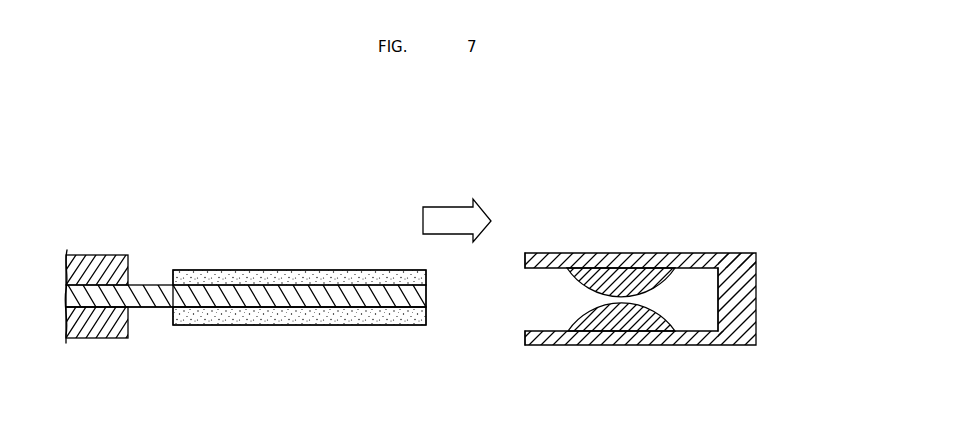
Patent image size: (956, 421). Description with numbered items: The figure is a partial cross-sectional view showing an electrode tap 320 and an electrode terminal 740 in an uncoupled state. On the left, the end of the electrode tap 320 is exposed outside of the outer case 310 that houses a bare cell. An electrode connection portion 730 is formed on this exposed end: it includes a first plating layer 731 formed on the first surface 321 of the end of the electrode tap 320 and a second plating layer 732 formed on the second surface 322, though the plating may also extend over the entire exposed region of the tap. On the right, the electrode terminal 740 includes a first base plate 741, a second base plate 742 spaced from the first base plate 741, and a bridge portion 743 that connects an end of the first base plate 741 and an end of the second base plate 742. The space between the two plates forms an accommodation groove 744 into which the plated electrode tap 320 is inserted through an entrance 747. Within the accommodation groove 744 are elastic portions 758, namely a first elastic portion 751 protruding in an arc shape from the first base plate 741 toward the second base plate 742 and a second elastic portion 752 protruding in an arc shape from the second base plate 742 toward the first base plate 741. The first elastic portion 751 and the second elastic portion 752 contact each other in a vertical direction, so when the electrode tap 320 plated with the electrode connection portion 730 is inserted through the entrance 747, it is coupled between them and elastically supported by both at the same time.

The outer case 310 is at (97, 257).
The electrode tap 320 is at (96, 310).
The first surface 321 is at (153, 286).
The second surface 322 is at (153, 307).
The electrode connection portion 730 is at (299, 309).
The first plating layer 731 is at (293, 272).
The second plating layer 732 is at (352, 330).
The electrode terminal 740 is at (635, 287).
The first base plate 741 is at (537, 264).
The second base plate 742 is at (552, 343).
The bridge portion 743 is at (747, 331).
The accommodation groove 744 is at (692, 301).
The entrance 747 is at (528, 303).
The first elastic portion 751 is at (640, 275).
The second elastic portion 752 is at (617, 313).
The elastic portions 758 is at (619, 249).